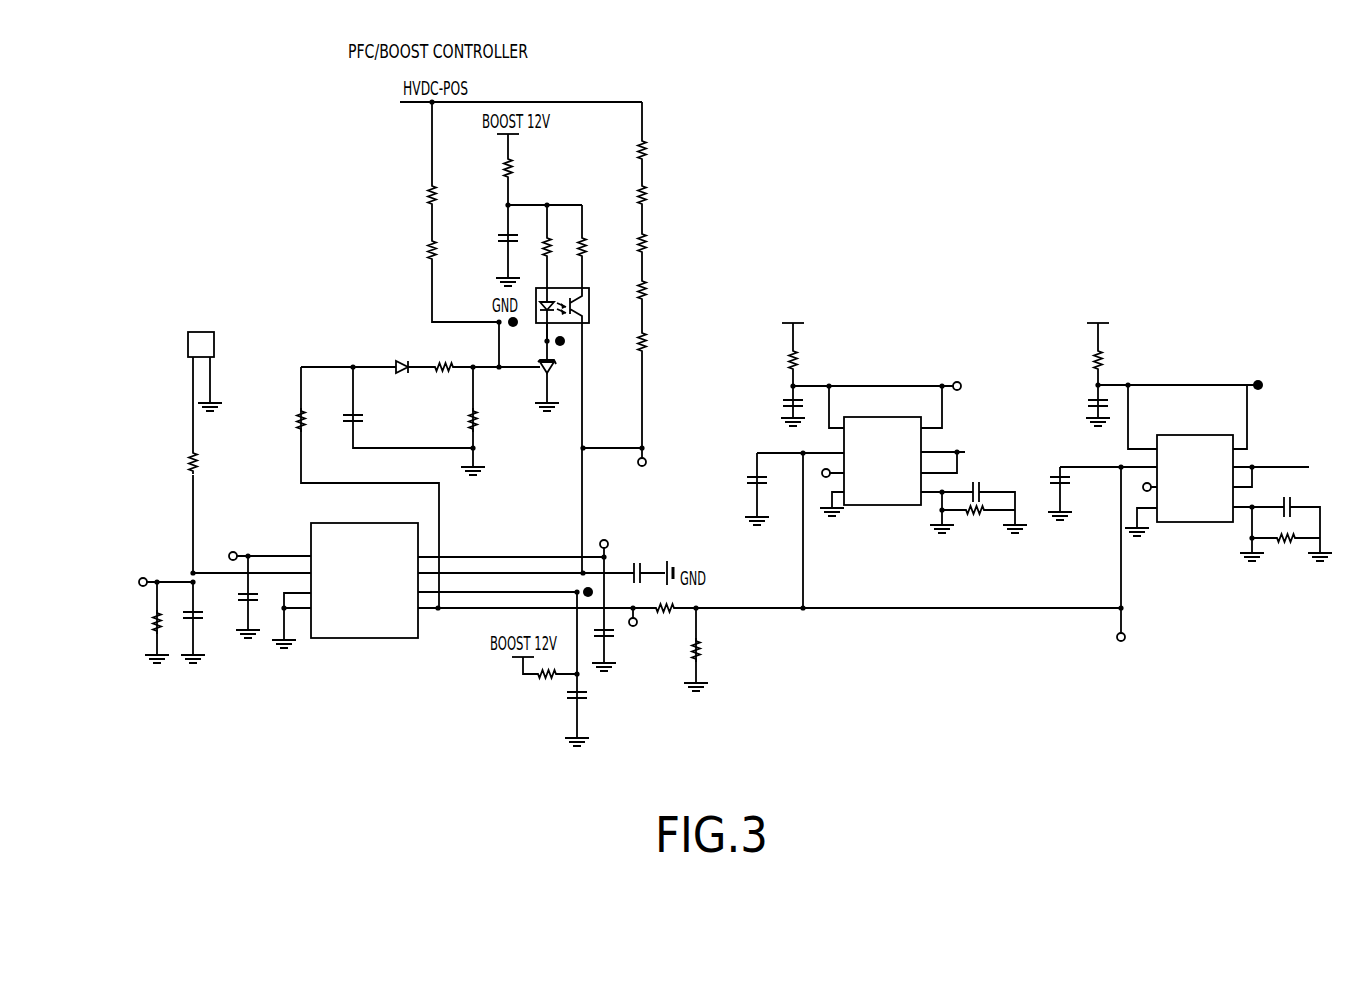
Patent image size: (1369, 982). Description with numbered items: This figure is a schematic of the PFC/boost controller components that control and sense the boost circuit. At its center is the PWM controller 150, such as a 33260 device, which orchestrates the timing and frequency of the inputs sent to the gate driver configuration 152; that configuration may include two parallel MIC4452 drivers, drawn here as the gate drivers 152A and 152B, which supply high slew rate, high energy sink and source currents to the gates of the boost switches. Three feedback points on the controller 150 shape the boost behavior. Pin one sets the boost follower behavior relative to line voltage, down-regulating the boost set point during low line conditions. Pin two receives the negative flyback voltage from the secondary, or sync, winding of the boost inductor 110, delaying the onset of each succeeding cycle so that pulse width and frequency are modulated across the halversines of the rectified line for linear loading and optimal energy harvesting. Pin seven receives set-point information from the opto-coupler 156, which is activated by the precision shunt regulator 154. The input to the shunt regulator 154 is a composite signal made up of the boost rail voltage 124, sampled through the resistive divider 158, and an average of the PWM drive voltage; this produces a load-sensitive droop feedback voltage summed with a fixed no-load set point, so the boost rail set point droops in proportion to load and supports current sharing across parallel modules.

The boost inductor 110 is at (240, 347).
The boost rail voltage 124 is at (1288, 467).
The PWM controller 150 is at (378, 640).
The gate driver configuration 152 is at (1004, 314).
The gate driver 152A is at (882, 505).
The gate driver 152B is at (1192, 522).
The shunt regulator 154 is at (538, 396).
The opto-coupler 156 is at (607, 316).
The resistive divider 158 is at (708, 242).